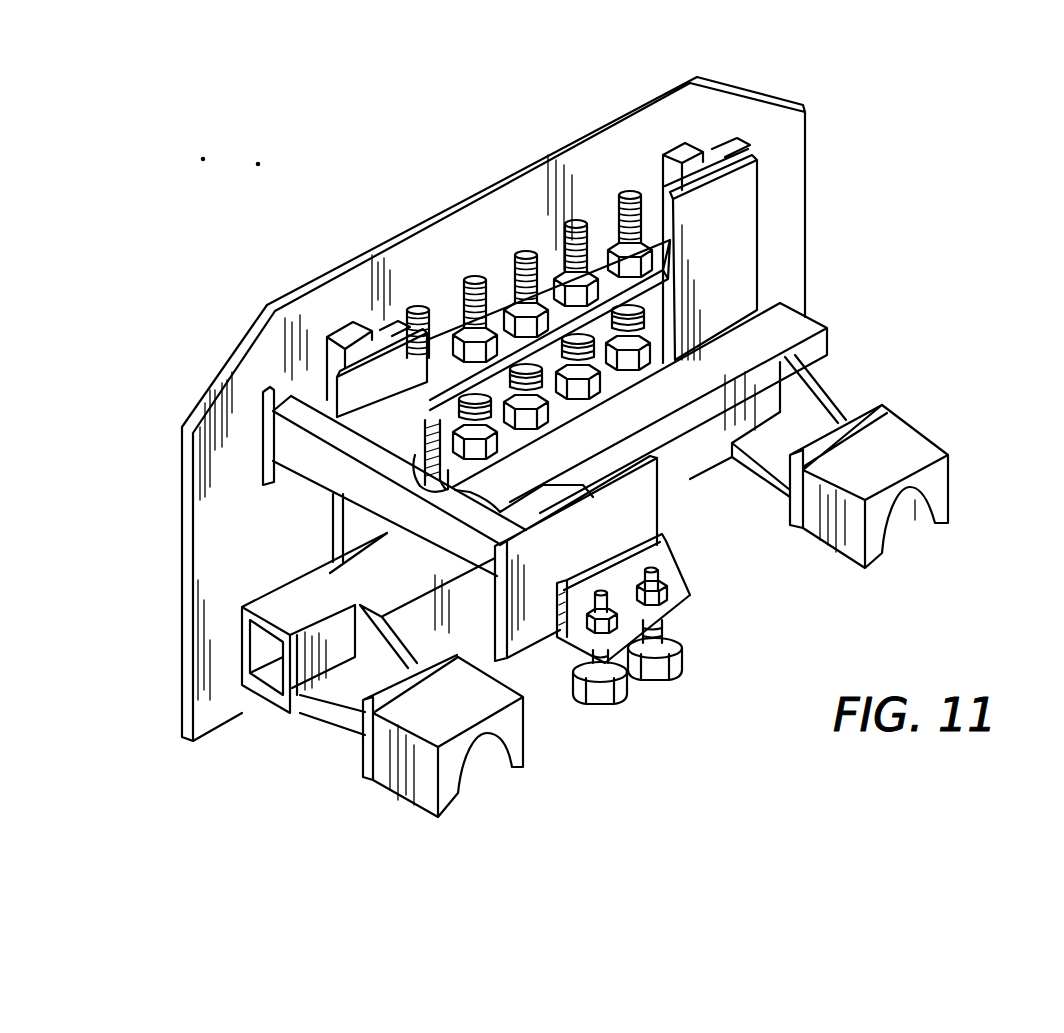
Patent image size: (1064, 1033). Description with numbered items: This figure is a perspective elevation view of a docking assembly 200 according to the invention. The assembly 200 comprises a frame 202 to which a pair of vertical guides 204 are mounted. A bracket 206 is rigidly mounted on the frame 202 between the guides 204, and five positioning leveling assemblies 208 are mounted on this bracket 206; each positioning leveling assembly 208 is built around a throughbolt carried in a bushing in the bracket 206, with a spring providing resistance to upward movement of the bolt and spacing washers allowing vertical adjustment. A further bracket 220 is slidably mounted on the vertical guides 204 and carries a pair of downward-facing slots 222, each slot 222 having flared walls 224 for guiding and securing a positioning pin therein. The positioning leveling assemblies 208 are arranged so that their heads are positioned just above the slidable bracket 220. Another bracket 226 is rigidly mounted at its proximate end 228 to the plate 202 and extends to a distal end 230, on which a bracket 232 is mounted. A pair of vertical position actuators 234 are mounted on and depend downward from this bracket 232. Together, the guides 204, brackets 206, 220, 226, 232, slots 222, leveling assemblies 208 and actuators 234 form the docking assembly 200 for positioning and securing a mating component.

The docking assembly 200 is at (817, 153).
The frame 202 is at (778, 137).
The vertical guides 204 is at (412, 408).
The bracket 206 is at (493, 290).
The positioning leveling assemblies 208 is at (619, 190).
The bracket 220 is at (803, 328).
The downward-facing slots 222 is at (953, 470).
The flared walls 224 is at (925, 510).
The bracket 226 is at (333, 478).
The proximate end 228 is at (263, 458).
The distal end 230 is at (638, 537).
The bracket 232 is at (660, 557).
The vertical position actuators 234 is at (630, 704).